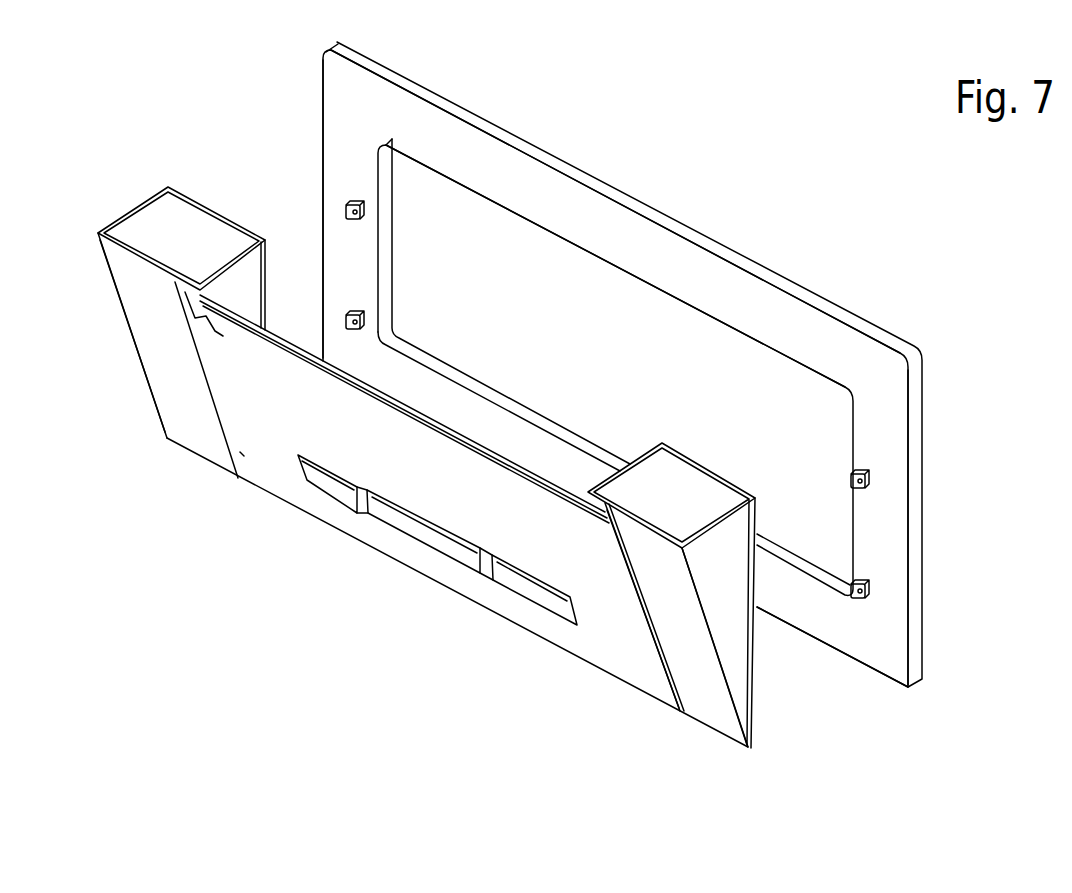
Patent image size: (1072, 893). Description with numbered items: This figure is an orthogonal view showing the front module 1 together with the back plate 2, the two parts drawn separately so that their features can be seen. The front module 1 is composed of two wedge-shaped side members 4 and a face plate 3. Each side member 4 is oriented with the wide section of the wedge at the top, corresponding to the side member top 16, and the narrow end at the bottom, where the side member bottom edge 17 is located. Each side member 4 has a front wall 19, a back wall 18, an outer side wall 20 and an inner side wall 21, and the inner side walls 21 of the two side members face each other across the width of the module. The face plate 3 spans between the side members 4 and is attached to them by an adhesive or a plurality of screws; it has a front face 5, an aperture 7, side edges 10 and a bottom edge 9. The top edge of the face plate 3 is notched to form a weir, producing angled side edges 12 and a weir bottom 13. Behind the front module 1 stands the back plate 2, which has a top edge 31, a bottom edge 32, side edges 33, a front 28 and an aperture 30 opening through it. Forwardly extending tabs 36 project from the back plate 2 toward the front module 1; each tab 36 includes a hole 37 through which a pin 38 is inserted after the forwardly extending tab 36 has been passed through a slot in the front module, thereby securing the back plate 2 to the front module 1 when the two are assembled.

The front module 1 is at (574, 396).
The back plate 2 is at (662, 381).
The face plate 3 is at (457, 523).
The side member 4 is at (448, 462).
The front face 5 is at (330, 488).
The aperture 7 is at (518, 580).
The bottom edge 9 is at (307, 521).
The side edge 10 is at (147, 374).
The angled side edge 12 is at (222, 338).
The weir bottom 13 is at (402, 406).
The side member top 16 is at (426, 367).
The side member bottom edge 17 is at (212, 463).
The back wall 18 is at (205, 203).
The front wall 19 is at (423, 490).
The outer side wall 20 is at (718, 623).
The inner side wall 21 is at (246, 285).
The front 28 is at (615, 266).
The aperture 30 is at (615, 367).
The top edge 31 is at (670, 220).
The bottom edge 32 is at (840, 656).
The side edge 33 is at (322, 108).
The forwardly extending tab 36 is at (347, 204).
The hole 37 is at (364, 317).
The pin 38 is at (347, 316).